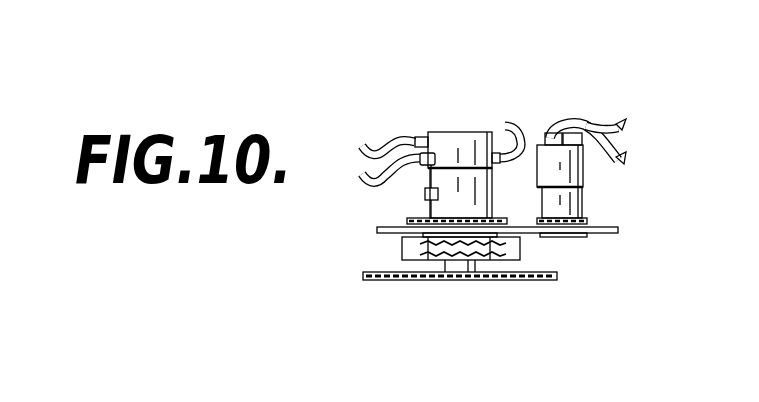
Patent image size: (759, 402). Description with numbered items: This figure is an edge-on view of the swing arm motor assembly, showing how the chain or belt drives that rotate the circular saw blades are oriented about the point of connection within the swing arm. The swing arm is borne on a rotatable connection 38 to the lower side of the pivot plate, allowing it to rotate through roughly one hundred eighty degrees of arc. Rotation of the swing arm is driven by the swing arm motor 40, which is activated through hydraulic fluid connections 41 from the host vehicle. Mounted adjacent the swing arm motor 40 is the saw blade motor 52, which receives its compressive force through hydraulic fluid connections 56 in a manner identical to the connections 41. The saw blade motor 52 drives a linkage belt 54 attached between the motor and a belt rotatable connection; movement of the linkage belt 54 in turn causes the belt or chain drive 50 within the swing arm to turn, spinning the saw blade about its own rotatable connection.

The rotatable connection 38 is at (490, 262).
The swing arm motor 40 is at (455, 134).
The hydraulic fluid connections 41 is at (412, 124).
The belt or chain drive 50 is at (417, 252).
The saw blade motor 52 is at (573, 172).
The linkage belt 54 is at (588, 221).
The hydraulic fluid connections 56 is at (578, 130).